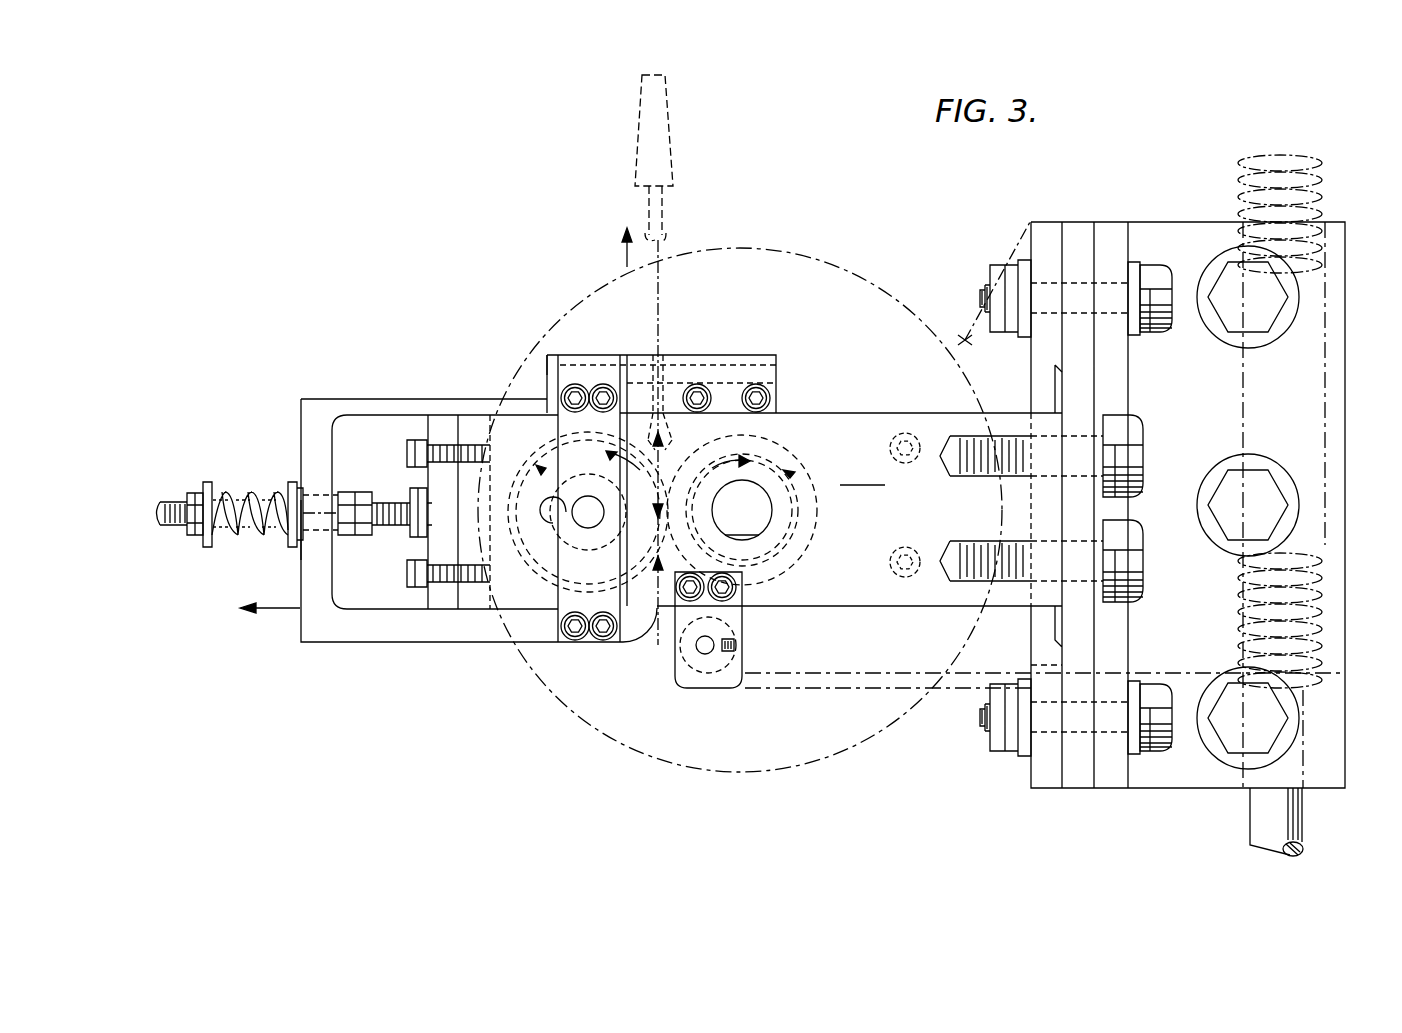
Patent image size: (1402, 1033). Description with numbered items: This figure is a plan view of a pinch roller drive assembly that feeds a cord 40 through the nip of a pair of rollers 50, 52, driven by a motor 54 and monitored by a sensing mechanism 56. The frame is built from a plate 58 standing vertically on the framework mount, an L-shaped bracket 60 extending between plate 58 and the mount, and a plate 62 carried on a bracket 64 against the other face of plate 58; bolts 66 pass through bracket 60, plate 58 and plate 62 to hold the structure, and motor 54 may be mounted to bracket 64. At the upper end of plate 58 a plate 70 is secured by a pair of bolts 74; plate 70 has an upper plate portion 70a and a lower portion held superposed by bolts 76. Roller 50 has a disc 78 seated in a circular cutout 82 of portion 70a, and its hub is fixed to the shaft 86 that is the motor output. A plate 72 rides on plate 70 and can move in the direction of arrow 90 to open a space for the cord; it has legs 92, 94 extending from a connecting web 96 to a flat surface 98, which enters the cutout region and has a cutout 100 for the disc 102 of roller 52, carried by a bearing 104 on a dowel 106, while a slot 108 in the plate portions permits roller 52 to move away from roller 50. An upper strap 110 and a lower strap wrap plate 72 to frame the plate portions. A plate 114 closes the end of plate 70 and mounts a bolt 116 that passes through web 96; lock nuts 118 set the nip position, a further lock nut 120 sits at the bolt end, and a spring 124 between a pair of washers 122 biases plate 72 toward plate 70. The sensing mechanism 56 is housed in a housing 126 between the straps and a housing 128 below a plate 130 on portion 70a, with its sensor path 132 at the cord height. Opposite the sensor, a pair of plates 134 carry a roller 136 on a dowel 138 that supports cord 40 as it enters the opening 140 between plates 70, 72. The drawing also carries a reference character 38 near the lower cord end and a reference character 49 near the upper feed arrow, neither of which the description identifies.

The strand end 38 is at (1305, 833).
The cord 40 is at (1322, 622).
The wire feed direction 49 is at (625, 258).
The roller 50 is at (800, 466).
The roller 52 is at (536, 462).
The motor 54 is at (676, 755).
The sensing mechanism 56 is at (748, 352).
The plate 58 is at (1104, 624).
The bracket 60 is at (1205, 230).
The plate 62 is at (1040, 636).
The bracket 64 is at (962, 338).
The bolts 66 is at (1158, 278).
The plate 70 is at (864, 437).
The upper plate portion 70a is at (861, 474).
The plate 72 is at (426, 626).
The bolts 74 is at (1135, 468).
The bolts 76 is at (905, 547).
The disc 78 is at (780, 455).
The circular cutout 82 is at (812, 567).
The shaft 86 is at (775, 510).
The arrow 90 is at (296, 612).
The leg 92 is at (466, 625).
The leg 94 is at (428, 410).
The connecting web 96 is at (306, 560).
The flat surface 98 is at (530, 441).
The cutout 100 is at (552, 548).
The disc 102 is at (652, 575).
The bearing 104 is at (560, 575).
The dowel 106 is at (588, 530).
The slot 108 is at (545, 515).
The upper strap 110 is at (594, 380).
The plate 114 is at (448, 420).
The bolt 116 is at (390, 503).
The lock nuts 118 is at (413, 537).
The lock nut 120 is at (198, 536).
The washers 122 is at (296, 482).
The spring 124 is at (250, 538).
The housing 126 is at (546, 355).
The housing 128 is at (776, 365).
The plate 130 is at (770, 400).
The path 132 is at (712, 360).
The plates 134 is at (735, 665).
The roller 136 is at (740, 625).
The dowel 138 is at (700, 655).
The opening 140 is at (645, 638).